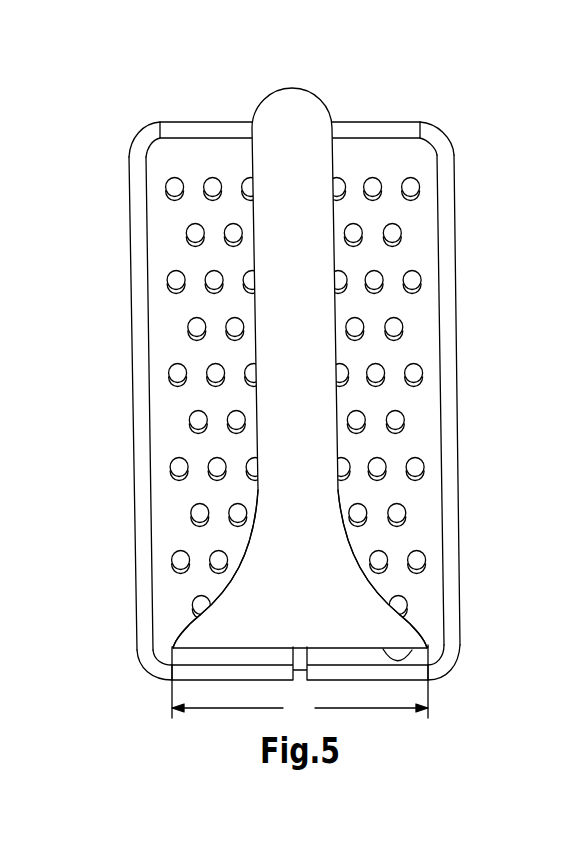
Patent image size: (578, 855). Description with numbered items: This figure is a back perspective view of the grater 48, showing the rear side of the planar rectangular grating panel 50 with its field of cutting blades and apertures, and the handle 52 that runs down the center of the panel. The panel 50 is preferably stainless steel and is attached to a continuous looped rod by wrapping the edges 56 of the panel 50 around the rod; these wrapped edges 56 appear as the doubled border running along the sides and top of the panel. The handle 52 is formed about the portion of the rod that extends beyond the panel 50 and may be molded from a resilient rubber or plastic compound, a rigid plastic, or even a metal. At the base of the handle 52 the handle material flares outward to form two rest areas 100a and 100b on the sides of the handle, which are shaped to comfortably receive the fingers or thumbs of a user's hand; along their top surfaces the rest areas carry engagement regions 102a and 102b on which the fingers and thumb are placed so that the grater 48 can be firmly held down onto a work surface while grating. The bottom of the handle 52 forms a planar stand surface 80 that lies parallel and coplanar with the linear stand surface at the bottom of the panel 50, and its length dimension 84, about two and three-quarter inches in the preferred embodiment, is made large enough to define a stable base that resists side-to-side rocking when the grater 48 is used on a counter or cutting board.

The grater 48 is at (309, 375).
The grating panel 50 is at (423, 229).
The handle 52 is at (302, 325).
The edges 56 is at (137, 222).
The stand surface 80 is at (380, 655).
The length dimension 84 is at (300, 681).
The rest area 100a is at (227, 632).
The rest area 100b is at (393, 627).
The engagement region 102a is at (227, 592).
The engagement region 102b is at (364, 587).